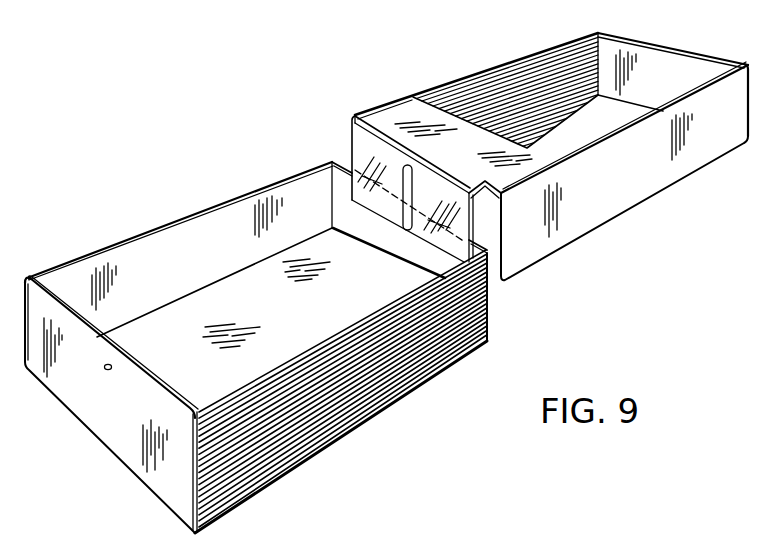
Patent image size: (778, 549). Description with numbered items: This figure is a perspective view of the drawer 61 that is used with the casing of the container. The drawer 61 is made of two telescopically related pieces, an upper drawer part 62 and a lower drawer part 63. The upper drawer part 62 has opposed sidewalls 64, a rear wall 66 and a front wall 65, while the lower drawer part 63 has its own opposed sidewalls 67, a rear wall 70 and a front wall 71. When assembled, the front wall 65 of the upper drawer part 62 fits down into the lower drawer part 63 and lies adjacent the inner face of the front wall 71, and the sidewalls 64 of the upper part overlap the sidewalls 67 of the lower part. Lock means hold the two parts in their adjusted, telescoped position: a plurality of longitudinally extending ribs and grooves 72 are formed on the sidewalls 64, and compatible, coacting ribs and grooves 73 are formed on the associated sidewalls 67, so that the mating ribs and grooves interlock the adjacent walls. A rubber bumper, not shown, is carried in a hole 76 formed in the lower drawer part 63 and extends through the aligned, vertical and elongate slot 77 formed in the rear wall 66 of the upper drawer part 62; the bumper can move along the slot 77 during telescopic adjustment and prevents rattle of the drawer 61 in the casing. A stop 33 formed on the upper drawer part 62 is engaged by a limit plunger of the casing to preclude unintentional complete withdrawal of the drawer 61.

The stop 33 is at (527, 145).
The drawer 61 is at (125, 237).
The upper drawer part 62 is at (673, 40).
The lower drawer part 63 is at (65, 406).
The sidewalls 64 is at (457, 82).
The front wall 65 is at (717, 68).
The rear wall 66 is at (350, 137).
The sidewalls 67 is at (185, 213).
The rear wall 70 is at (396, 256).
The front wall 71 is at (163, 390).
The ribs and grooves 72 is at (522, 78).
The ribs and grooves 73 is at (260, 408).
The hole 76 is at (111, 366).
The slot 77 is at (414, 171).